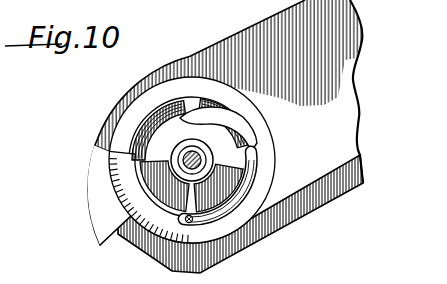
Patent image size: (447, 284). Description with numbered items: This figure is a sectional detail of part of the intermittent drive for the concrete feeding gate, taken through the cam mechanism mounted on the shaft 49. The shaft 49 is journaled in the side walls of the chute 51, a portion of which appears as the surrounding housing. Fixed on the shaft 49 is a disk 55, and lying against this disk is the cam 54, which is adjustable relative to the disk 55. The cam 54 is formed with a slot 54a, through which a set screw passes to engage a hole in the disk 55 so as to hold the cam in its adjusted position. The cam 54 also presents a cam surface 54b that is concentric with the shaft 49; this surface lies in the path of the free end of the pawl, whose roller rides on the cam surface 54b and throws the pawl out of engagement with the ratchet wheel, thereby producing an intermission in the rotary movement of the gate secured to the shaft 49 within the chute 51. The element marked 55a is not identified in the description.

The shaft 49 is at (199, 151).
The chute 51 is at (225, 136).
The cam 54 is at (250, 160).
The slot 54a is at (200, 183).
The cam surface 54b is at (235, 127).
The disk 55 is at (131, 114).
The pointer 55a is at (117, 193).